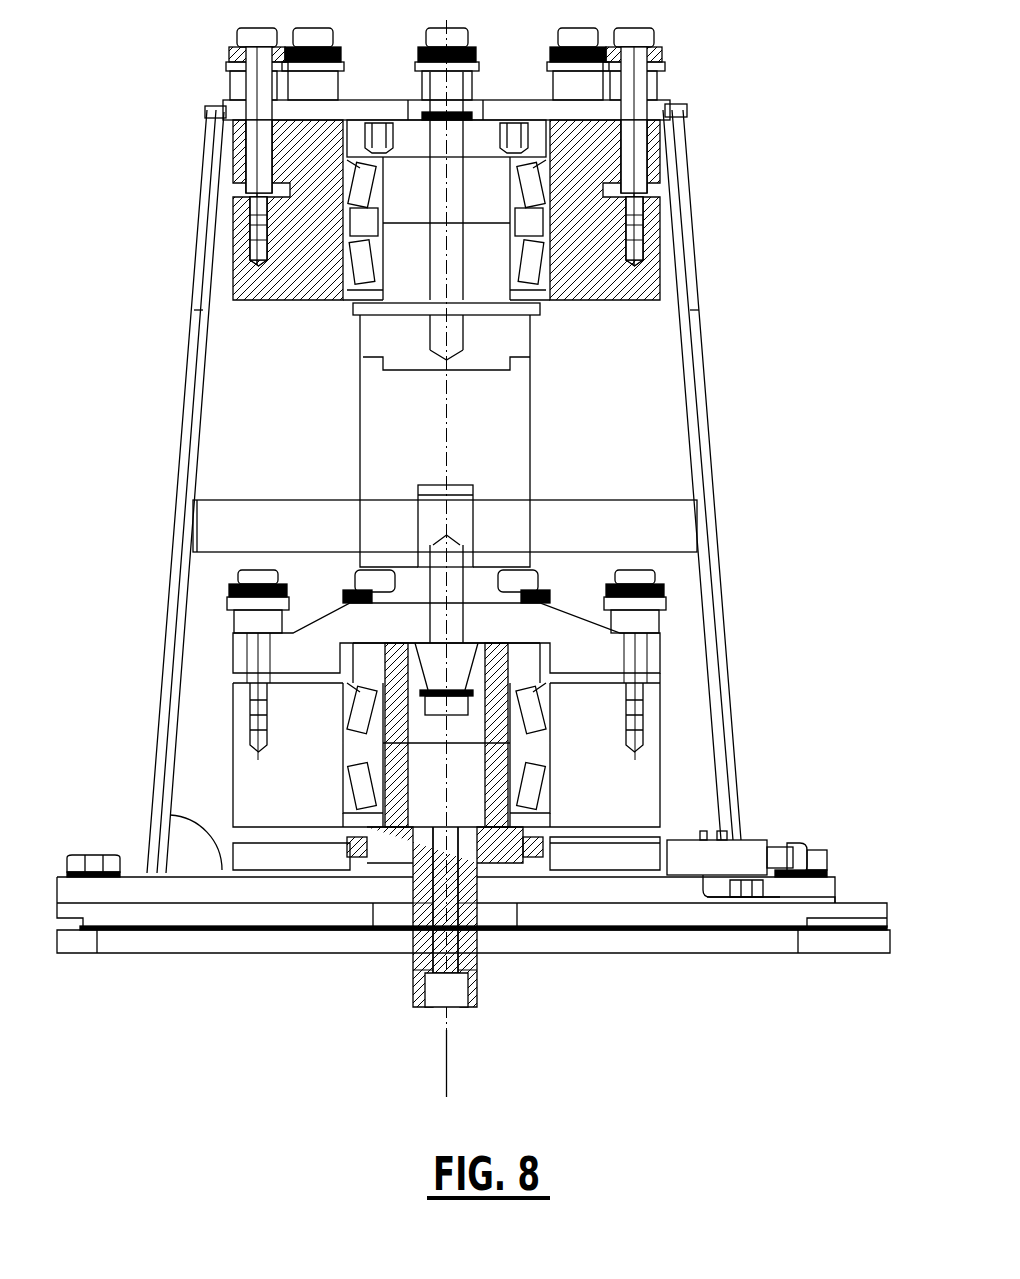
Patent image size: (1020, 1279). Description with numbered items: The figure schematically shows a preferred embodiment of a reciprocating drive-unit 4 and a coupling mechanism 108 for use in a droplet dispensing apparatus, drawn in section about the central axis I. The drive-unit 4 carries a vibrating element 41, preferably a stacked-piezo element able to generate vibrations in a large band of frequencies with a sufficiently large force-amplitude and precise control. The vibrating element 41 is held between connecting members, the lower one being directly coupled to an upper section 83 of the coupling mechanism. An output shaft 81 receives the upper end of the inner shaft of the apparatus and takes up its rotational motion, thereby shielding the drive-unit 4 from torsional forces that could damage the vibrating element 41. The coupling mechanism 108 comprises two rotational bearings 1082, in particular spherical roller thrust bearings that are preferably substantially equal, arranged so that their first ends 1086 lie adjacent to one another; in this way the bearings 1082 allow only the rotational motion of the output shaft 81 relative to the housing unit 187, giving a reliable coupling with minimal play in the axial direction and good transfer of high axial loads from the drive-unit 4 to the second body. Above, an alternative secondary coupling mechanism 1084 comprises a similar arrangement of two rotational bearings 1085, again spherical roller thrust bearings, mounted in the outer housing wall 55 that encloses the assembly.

The reciprocating drive-unit 4 is at (552, 405).
The vibrating element 41 is at (513, 333).
The housing side wall 55 is at (680, 148).
The output shaft 81 is at (420, 887).
The upper section 83 is at (592, 650).
The coupling mechanism 108 is at (670, 720).
The housing unit 187 is at (584, 822).
The rotational bearings 1082 is at (540, 702).
The secondary coupling mechanism 1084 is at (222, 257).
The rotational bearings 1085 is at (353, 173).
The first ends 1086 is at (522, 745).
The section axis I is at (446, 1052).